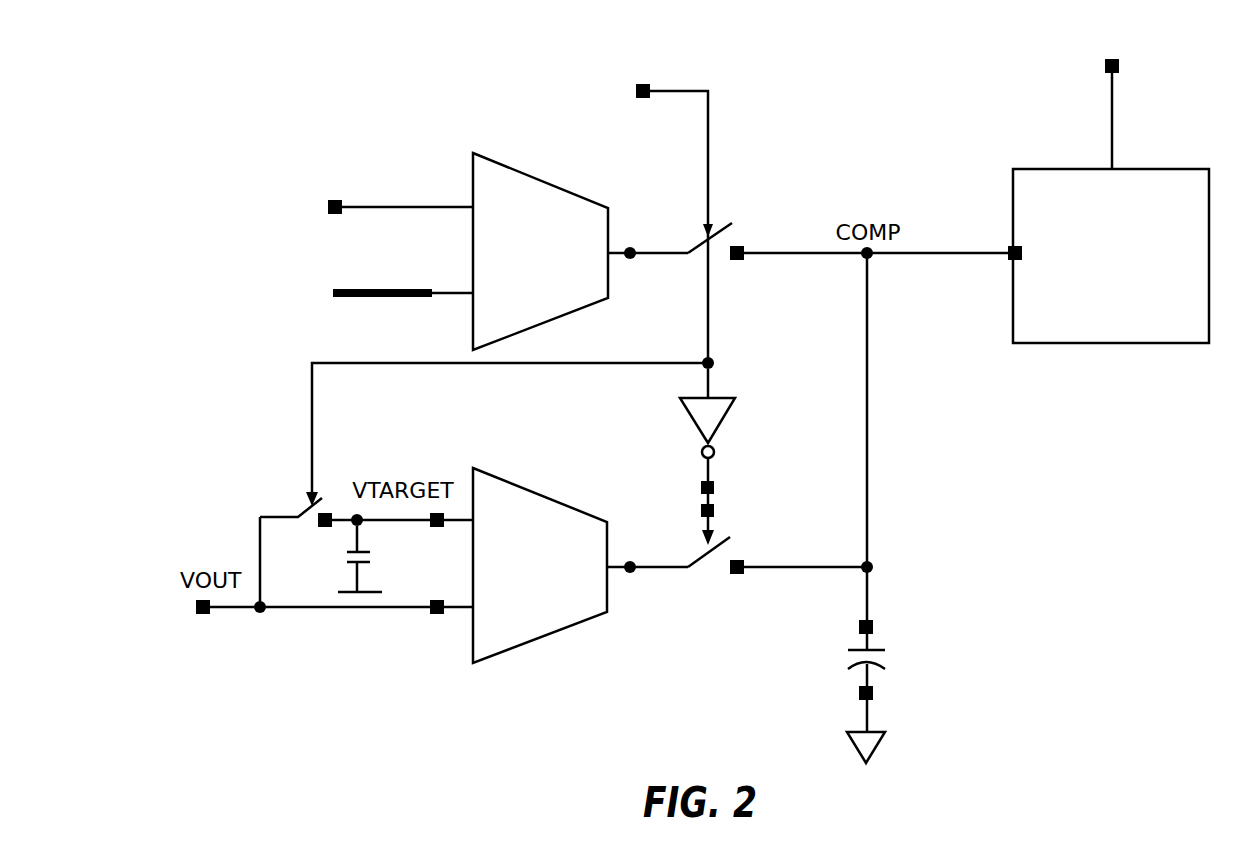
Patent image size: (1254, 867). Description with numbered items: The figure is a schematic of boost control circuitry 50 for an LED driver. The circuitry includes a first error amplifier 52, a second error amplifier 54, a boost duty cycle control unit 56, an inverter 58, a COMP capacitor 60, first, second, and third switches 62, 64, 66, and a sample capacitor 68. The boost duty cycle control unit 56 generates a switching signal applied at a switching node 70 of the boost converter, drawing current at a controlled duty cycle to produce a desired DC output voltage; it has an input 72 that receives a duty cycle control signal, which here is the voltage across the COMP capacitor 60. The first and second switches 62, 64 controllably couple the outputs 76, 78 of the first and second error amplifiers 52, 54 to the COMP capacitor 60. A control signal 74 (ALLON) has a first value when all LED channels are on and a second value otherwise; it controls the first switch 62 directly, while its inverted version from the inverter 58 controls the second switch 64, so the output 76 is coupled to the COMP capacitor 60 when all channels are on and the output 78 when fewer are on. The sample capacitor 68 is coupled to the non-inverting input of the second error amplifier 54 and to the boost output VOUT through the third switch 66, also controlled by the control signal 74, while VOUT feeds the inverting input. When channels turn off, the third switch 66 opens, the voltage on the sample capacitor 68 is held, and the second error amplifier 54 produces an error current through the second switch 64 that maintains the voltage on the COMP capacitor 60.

The boost control circuitry 50 is at (378, 86).
The first error amplifier 52 is at (550, 184).
The second error amplifier 54 is at (538, 494).
The boost duty cycle control unit 56 is at (1111, 256).
The inverter 58 is at (728, 417).
The COMP capacitor 60 is at (848, 661).
The first switch 62 is at (738, 236).
The second switch 64 is at (723, 557).
The third switch 66 is at (304, 496).
The sample capacitor 68 is at (373, 556).
The switching node 70 is at (1104, 66).
The input 72 is at (1008, 250).
The control signal 74 is at (708, 113).
The output 76 is at (631, 259).
The output 78 is at (632, 573).